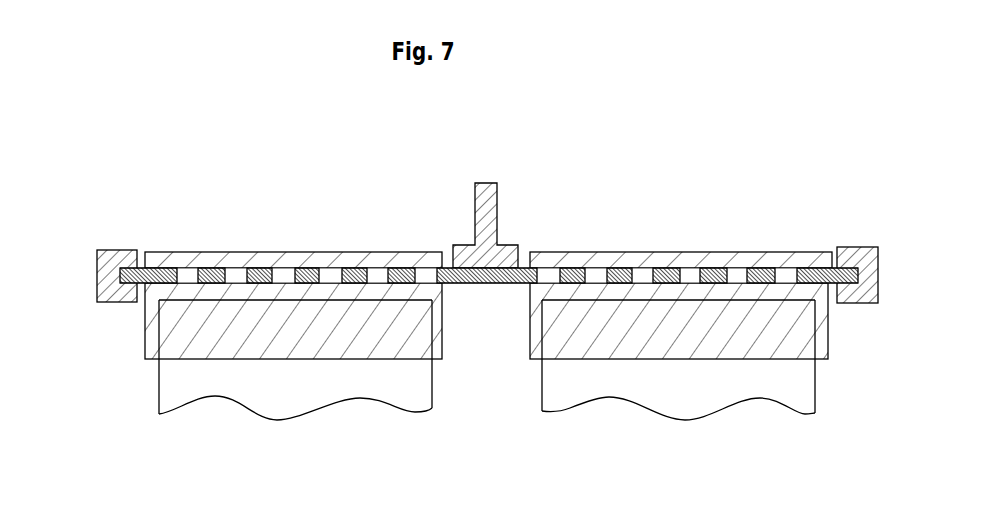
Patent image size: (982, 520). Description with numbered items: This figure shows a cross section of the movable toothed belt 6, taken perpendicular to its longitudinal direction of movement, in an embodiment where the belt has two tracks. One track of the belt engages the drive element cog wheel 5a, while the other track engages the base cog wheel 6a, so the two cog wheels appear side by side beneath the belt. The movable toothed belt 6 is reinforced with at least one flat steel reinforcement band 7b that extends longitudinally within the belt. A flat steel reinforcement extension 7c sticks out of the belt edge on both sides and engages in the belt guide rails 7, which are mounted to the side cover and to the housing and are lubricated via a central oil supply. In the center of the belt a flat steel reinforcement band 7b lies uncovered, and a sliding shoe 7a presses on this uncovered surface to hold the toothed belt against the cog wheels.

The belt guide rail 7 is at (115, 250).
The sliding shoe 7a is at (484, 183).
The flat steel reinforcement band 7b is at (305, 252).
The flat steel reinforcement extension 7c is at (140, 268).
The movable toothed belt 6 is at (601, 268).
The drive element cog wheel 5a is at (218, 380).
The base cog wheel 6a is at (609, 385).